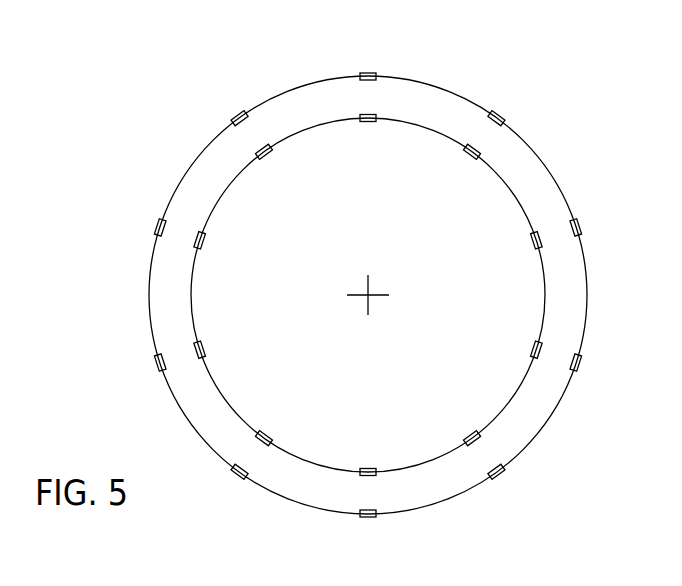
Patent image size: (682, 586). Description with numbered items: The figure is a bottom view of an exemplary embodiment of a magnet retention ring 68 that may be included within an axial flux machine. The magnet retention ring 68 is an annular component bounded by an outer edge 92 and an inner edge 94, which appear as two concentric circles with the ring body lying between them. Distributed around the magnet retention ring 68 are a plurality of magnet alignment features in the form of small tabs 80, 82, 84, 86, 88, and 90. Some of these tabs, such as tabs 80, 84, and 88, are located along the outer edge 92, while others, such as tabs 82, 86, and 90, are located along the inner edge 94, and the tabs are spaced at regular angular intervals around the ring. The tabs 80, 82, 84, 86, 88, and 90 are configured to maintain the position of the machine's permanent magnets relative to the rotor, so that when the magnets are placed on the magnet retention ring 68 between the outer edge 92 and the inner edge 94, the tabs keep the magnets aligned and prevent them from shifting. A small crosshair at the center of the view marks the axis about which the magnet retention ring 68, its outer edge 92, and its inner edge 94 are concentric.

The magnet retention ring 68 is at (404, 279).
The tab 80 is at (371, 74).
The tab 82 is at (368, 121).
The tab 84 is at (502, 116).
The tab 86 is at (472, 153).
The tab 88 is at (581, 231).
The tab 90 is at (535, 239).
The outer edge 92 is at (591, 323).
The inner edge 94 is at (513, 395).